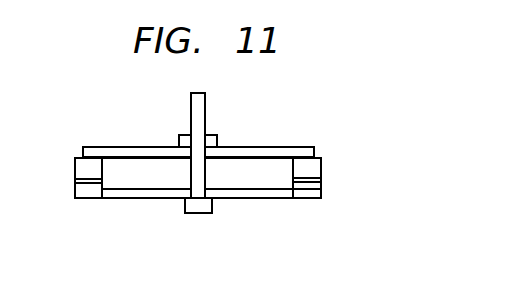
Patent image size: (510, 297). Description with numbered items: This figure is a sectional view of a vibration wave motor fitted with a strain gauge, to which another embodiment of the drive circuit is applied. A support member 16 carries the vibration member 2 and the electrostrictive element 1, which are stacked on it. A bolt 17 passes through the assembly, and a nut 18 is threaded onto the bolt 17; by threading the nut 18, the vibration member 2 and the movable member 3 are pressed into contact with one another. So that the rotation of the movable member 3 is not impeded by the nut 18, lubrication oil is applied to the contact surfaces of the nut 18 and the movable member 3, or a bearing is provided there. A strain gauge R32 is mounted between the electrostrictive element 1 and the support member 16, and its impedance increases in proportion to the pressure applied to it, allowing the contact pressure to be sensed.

The electrostrictive element 1 is at (322, 180).
The vibration member 2 is at (322, 168).
The movable member 3 is at (302, 147).
The support member 16 is at (315, 198).
The bolt 17 is at (207, 213).
The nut 18 is at (217, 140).
The strain gauge R32 is at (322, 192).